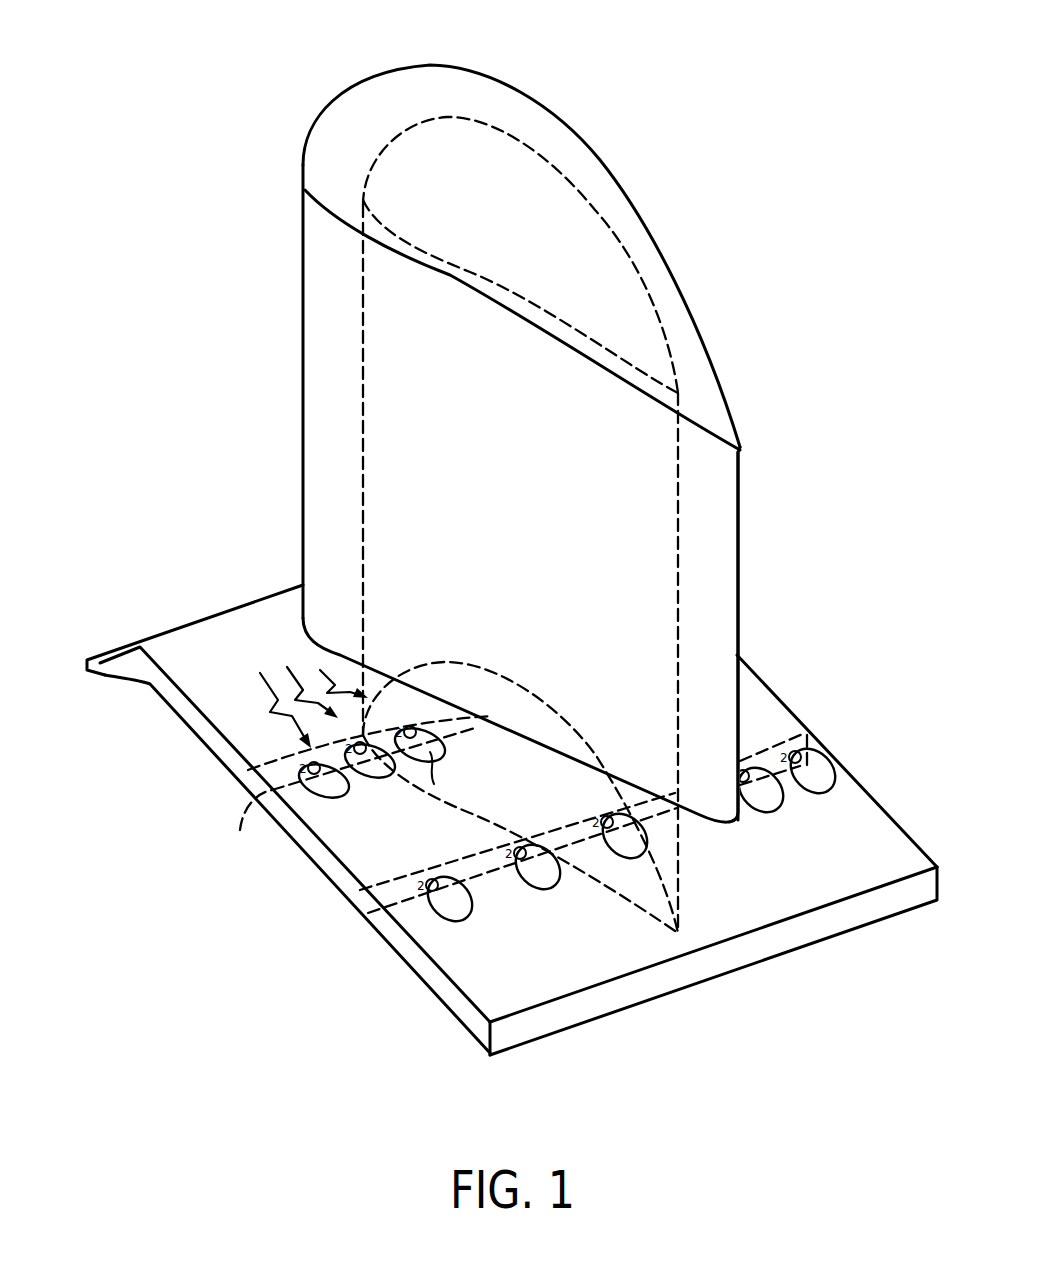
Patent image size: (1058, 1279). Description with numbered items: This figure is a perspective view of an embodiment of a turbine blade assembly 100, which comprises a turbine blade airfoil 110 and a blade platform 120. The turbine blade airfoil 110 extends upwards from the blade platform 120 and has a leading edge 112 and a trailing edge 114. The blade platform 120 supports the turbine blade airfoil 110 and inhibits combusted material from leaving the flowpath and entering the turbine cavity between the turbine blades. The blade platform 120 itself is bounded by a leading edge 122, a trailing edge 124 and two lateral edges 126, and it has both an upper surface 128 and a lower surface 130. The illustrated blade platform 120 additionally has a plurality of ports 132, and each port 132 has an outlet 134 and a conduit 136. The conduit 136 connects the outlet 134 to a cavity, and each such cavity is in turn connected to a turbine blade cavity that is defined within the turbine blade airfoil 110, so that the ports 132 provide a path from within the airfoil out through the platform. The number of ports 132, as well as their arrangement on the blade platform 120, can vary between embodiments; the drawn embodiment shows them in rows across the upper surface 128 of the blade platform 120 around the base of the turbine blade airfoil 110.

The turbine blade assembly 100 is at (733, 184).
The turbine blade airfoil 110 is at (318, 302).
The leading edge 112 is at (386, 70).
The trailing edge 114 is at (742, 522).
The blade platform 120 is at (135, 597).
The leading edge 122 is at (268, 612).
The trailing edge 124 is at (678, 958).
The lateral edges 126 is at (343, 875).
The upper surface 128 is at (895, 837).
The lower surface 130 is at (852, 932).
The ports 132 is at (301, 690).
The outlet 134 is at (335, 790).
The conduit 136 is at (417, 668).